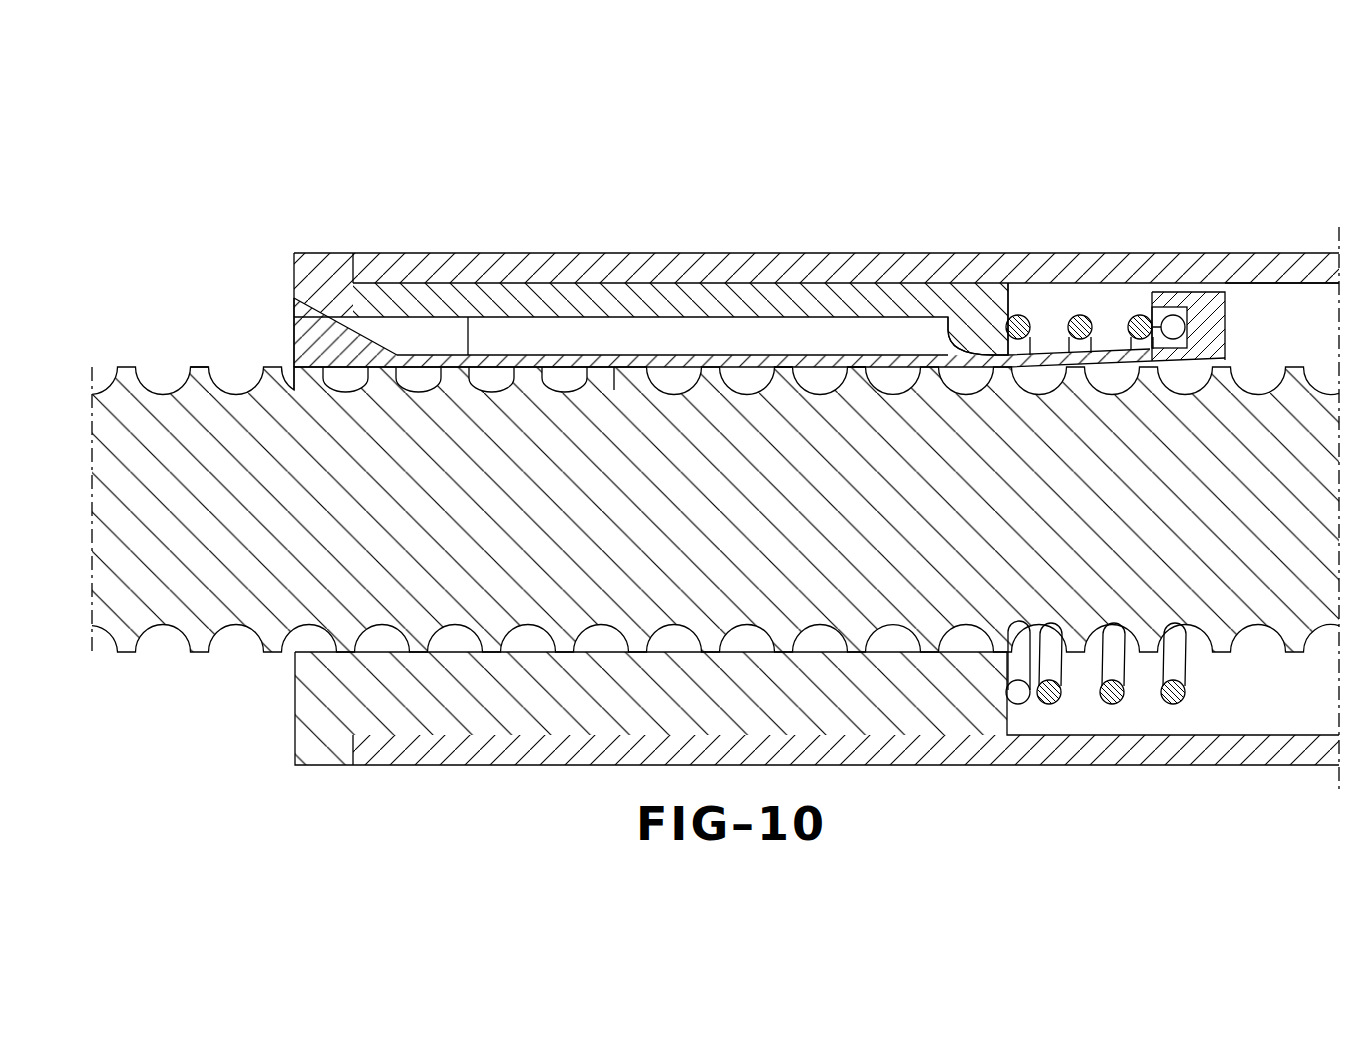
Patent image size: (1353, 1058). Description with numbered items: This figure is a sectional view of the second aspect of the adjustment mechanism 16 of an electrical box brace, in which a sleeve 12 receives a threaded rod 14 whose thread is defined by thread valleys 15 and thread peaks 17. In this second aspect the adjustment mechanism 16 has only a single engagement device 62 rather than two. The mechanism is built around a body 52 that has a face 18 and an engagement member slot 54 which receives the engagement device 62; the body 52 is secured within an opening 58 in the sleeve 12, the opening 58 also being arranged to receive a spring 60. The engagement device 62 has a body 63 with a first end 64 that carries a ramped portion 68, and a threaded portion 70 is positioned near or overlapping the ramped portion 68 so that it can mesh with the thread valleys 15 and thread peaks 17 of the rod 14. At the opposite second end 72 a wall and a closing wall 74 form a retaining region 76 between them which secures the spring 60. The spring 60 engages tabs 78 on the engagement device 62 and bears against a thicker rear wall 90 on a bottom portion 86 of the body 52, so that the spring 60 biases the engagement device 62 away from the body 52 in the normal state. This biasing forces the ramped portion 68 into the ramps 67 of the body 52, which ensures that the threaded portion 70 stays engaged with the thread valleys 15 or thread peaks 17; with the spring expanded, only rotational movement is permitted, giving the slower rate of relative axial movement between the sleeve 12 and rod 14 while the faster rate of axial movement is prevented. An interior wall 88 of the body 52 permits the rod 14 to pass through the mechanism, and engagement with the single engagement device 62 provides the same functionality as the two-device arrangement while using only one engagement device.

The sleeve 12 is at (886, 250).
The rod 14 is at (180, 633).
The thread valleys 15 is at (166, 393).
The adjustment mechanism 16 is at (1160, 158).
The thread peaks 17 is at (198, 367).
The face 18 is at (293, 725).
The body 52 is at (801, 287).
The engagement member slot 54 is at (418, 337).
The opening 58 is at (1273, 302).
The spring 60 is at (1025, 320).
The engagement device 62 is at (747, 352).
The body 63 is at (967, 281).
The first end 64 is at (294, 337).
The ramps 67 is at (294, 316).
The ramped portion 68 is at (357, 330).
The threaded portion 70 is at (322, 384).
The second end 72 is at (1227, 330).
The closing wall 74 is at (1174, 289).
The retaining region 76 is at (1138, 314).
The tabs 78 is at (976, 345).
The bottom portion 86 is at (455, 705).
The interior wall 88 is at (798, 645).
The rear wall 90 is at (1010, 712).